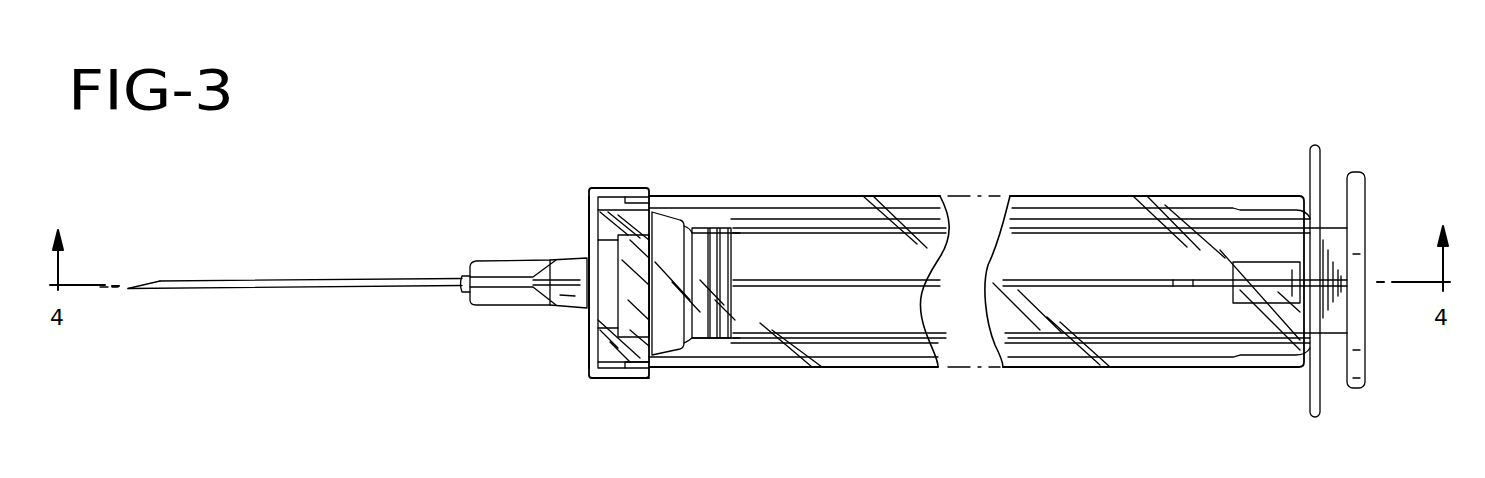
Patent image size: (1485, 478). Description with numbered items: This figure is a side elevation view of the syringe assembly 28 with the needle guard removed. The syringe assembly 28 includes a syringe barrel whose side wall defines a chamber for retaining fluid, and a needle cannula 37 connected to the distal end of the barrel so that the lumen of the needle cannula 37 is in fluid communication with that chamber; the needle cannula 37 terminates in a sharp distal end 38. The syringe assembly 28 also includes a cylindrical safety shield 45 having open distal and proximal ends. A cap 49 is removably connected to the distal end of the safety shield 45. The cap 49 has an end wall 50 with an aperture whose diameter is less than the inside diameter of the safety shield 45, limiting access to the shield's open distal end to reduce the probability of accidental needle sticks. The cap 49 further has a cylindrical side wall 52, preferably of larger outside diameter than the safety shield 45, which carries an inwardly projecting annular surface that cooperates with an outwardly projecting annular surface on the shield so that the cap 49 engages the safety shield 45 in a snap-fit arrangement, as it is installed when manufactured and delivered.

The syringe assembly 28 is at (436, 184).
The needle cannula 37 is at (320, 284).
The sharp distal end 38 is at (133, 288).
The cylindrical safety shield 45 is at (1067, 196).
The cap 49 is at (620, 188).
The end wall 50 is at (587, 347).
The cylindrical side wall 52 is at (624, 379).